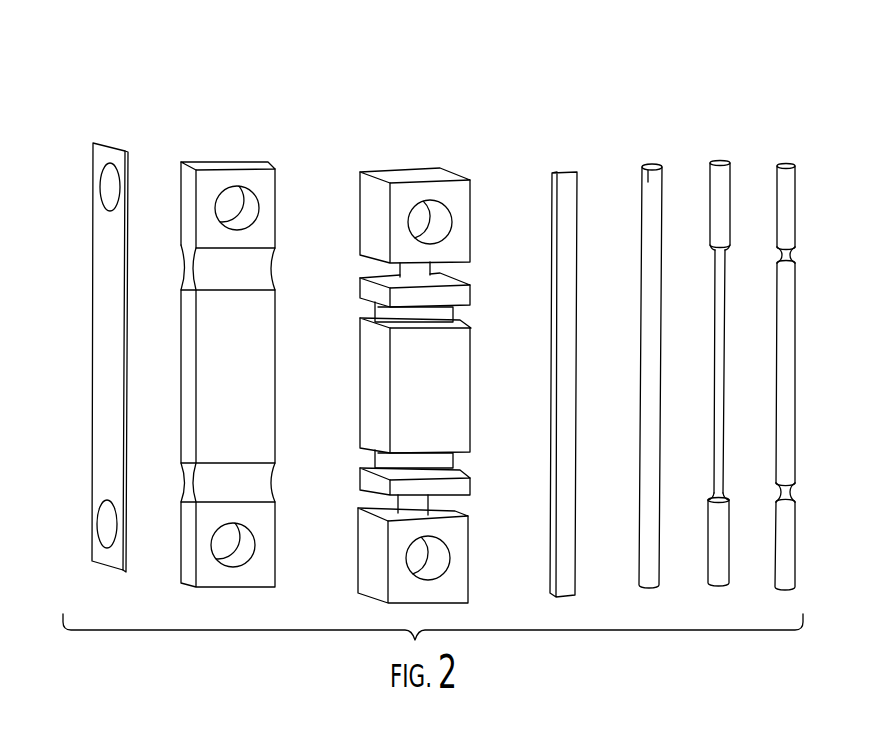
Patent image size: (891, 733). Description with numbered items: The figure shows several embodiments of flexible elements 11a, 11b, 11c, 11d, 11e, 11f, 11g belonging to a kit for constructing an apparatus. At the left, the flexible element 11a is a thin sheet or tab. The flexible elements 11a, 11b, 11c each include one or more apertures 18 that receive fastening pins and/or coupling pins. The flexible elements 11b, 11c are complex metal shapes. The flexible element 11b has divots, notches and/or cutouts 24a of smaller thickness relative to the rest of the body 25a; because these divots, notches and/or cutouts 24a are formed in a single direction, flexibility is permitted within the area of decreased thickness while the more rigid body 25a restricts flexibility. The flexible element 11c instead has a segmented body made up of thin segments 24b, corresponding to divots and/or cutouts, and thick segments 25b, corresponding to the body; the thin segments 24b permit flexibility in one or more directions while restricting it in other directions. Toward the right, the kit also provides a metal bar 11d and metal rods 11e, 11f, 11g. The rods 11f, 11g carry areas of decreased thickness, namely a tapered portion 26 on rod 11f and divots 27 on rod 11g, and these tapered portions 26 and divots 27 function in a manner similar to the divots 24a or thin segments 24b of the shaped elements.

The flexible element 11a is at (108, 150).
The flexible element 11b is at (260, 333).
The flexible element 11c is at (445, 350).
The metal bar 11d is at (567, 188).
The metal rod 11e is at (650, 180).
The metal rod 11f is at (743, 346).
The metal rod 11g is at (816, 366).
The aperture 18 is at (108, 193).
The divots, notches and/or cutouts 24a is at (255, 270).
The thin segments 24b is at (450, 277).
The body 25a is at (245, 393).
The thick segments 25b is at (435, 387).
The tapered portion 26 is at (722, 337).
The divot 27 is at (793, 255).